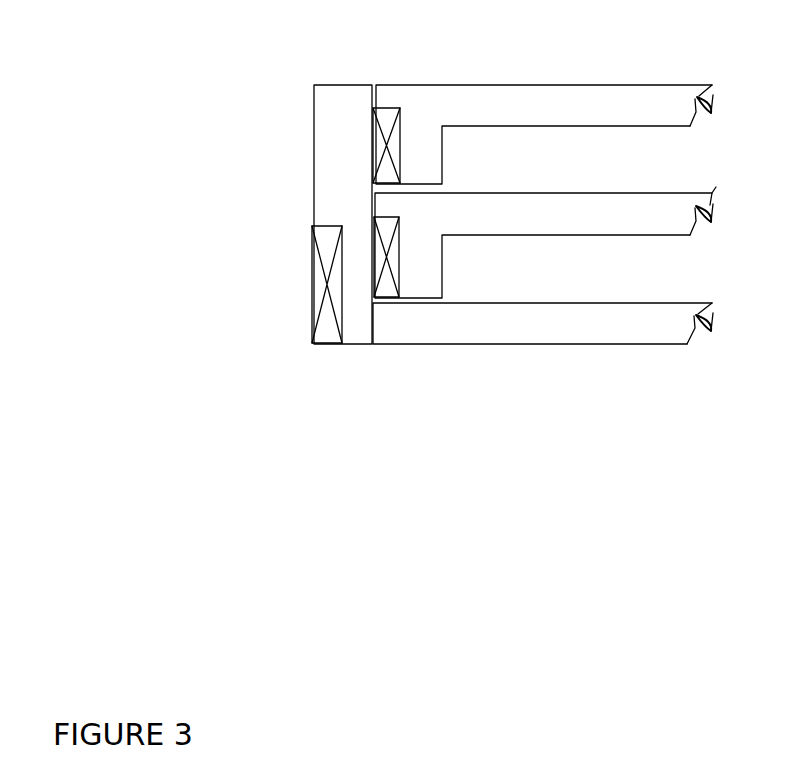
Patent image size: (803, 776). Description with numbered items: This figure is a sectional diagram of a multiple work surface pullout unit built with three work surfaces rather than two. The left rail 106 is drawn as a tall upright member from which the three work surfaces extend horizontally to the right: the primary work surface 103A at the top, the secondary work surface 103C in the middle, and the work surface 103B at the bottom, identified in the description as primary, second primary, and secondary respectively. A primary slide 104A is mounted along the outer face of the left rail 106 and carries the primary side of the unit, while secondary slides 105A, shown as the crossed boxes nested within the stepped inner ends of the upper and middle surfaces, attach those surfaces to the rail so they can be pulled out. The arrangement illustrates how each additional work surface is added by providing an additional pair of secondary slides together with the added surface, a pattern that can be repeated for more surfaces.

The left rail 106 is at (333, 88).
The primary work surface 103A is at (527, 85).
The secondary work surface 103B is at (522, 302).
The secondary work surface 103C is at (522, 193).
The secondary slide 105A is at (375, 233).
The primary slide 104A is at (304, 288).